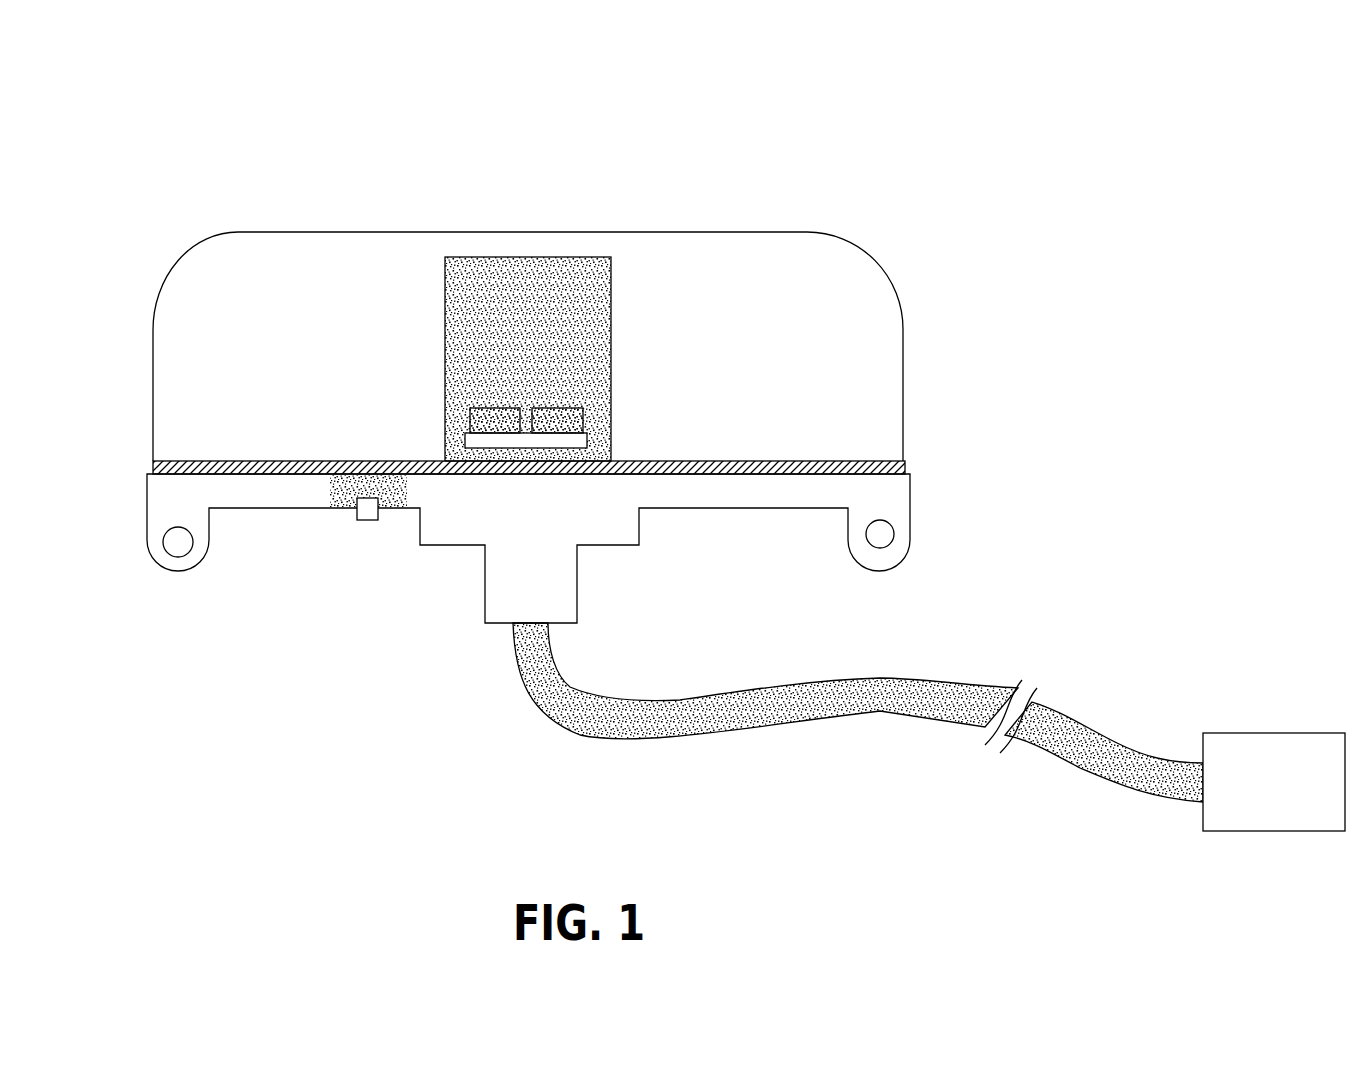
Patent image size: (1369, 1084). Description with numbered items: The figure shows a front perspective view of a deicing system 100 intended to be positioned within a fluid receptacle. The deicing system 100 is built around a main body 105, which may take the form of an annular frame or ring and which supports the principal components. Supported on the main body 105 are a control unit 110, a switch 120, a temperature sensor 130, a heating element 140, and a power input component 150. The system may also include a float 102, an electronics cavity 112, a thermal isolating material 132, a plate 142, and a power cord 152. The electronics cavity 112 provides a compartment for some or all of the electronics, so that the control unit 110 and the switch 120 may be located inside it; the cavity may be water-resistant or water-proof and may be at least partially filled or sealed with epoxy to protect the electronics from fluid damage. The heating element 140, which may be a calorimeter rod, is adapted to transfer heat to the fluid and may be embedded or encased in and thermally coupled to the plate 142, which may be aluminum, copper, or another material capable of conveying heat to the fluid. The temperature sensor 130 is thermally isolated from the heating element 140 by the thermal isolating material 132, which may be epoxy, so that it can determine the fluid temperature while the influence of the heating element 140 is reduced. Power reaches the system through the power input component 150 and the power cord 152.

The deicing system 100 is at (212, 122).
The float 102 is at (883, 328).
The main body 105 is at (868, 453).
The control unit 110 is at (481, 416).
The electronics cavity 112 is at (577, 277).
The switch 120 is at (572, 416).
The temperature sensor 130 is at (367, 523).
The thermal isolating material 132 is at (345, 505).
The heating element 140 is at (178, 542).
The plate 142 is at (725, 495).
The power input component 150 is at (1245, 733).
The power cord 152 is at (925, 680).